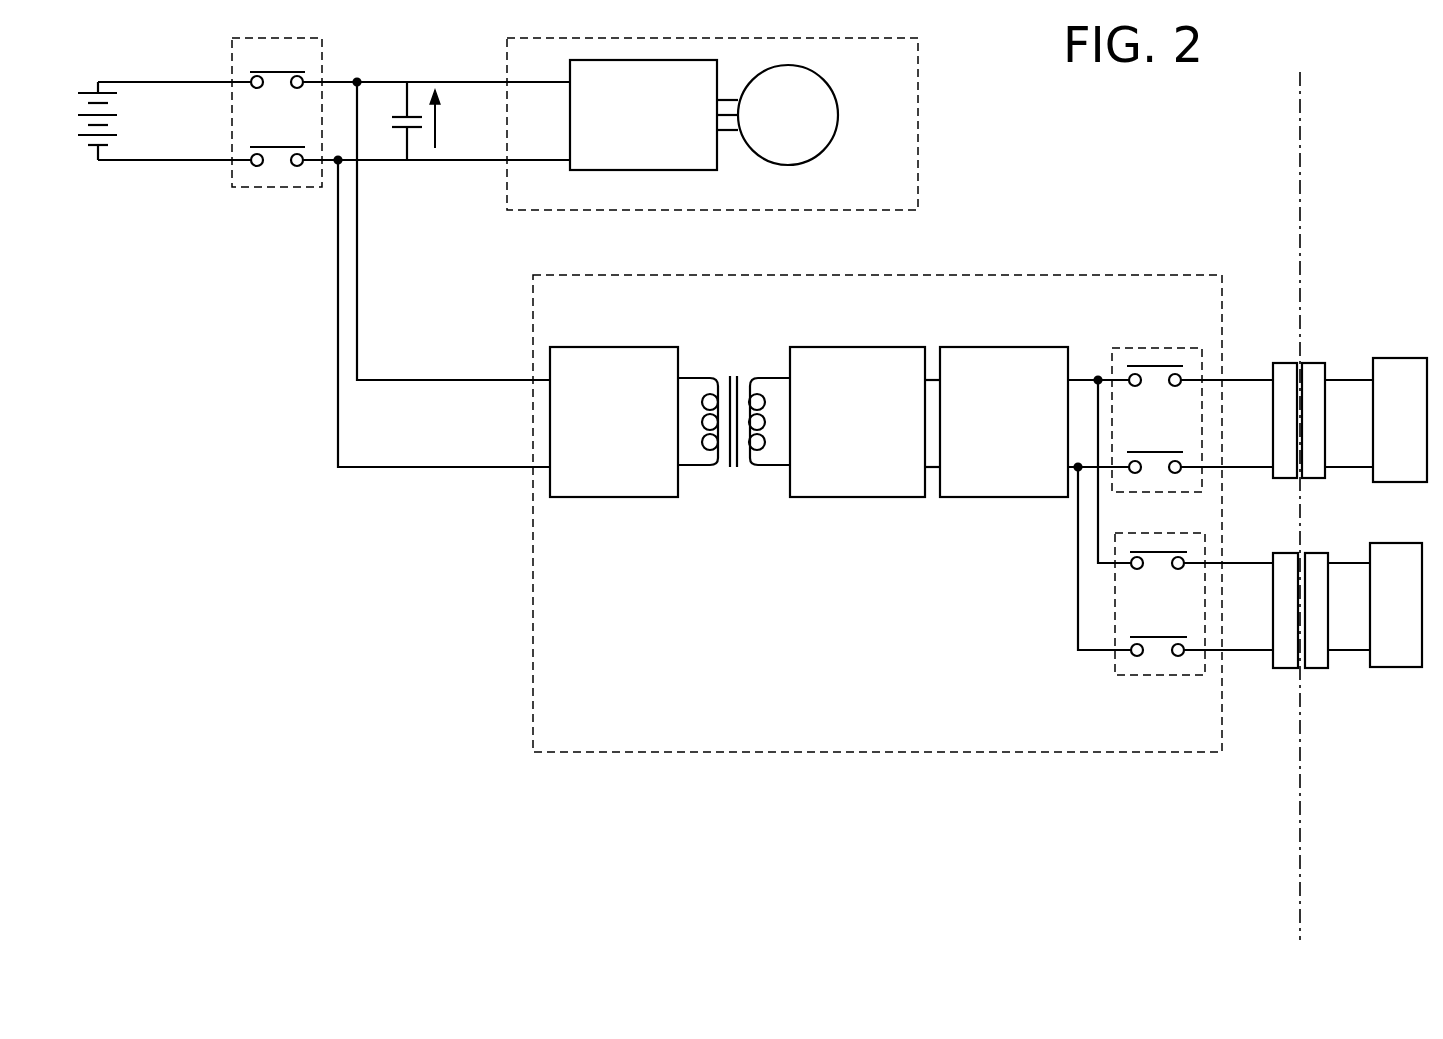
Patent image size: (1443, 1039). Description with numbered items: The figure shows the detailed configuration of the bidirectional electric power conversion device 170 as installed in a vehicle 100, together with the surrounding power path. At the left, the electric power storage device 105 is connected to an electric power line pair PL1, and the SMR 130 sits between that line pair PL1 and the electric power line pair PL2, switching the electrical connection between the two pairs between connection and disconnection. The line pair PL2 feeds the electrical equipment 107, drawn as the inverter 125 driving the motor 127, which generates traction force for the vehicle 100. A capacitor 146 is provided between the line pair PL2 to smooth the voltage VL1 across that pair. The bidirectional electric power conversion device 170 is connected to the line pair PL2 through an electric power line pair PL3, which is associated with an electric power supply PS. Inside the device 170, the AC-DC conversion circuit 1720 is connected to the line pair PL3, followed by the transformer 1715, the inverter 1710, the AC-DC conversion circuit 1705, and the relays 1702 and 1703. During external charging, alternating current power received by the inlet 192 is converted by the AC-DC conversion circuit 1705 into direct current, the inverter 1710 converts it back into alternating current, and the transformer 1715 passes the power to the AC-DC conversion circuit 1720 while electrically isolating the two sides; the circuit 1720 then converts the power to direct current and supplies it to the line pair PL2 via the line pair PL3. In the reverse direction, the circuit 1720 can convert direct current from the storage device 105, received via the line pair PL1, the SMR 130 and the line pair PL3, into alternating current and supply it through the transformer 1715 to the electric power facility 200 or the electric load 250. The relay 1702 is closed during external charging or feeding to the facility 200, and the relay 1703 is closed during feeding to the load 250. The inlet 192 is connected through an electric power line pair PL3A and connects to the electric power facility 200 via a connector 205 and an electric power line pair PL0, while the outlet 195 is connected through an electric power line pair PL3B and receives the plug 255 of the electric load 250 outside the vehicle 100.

The vehicle 100 is at (1272, 124).
The electric power storage device 105 is at (83, 158).
The electrical equipment 107 is at (918, 118).
The inverter 125 is at (640, 173).
The motor 127 is at (838, 108).
The SMR 130 is at (280, 188).
The capacitor 146 is at (397, 115).
The bidirectional electric power conversion device 170 is at (1038, 275).
The relay 1702 is at (1153, 348).
The relay 1703 is at (1164, 677).
The AC-DC conversion circuit 1705 is at (1004, 346).
The inverter 1710 is at (839, 346).
The transformer 1715 is at (747, 353).
The AC-DC conversion circuit 1720 is at (626, 346).
The inlet 192 is at (1285, 480).
The outlet 195 is at (1286, 672).
The electric power facility 200 is at (1397, 483).
The connector 205 is at (1318, 480).
The electric load 250 is at (1395, 670).
The plug 255 is at (1316, 672).
The electric power line pair PL1 is at (180, 172).
The electric power line pair PL2 is at (468, 175).
The electric power line pair PL3 is at (476, 488).
The electric power line pair PL3A is at (1235, 493).
The electric power line pair PL3B is at (1237, 537).
The electric power line pair PL0 is at (1342, 493).
The electric power supply PS is at (450, 444).
The voltage VL1 is at (456, 119).